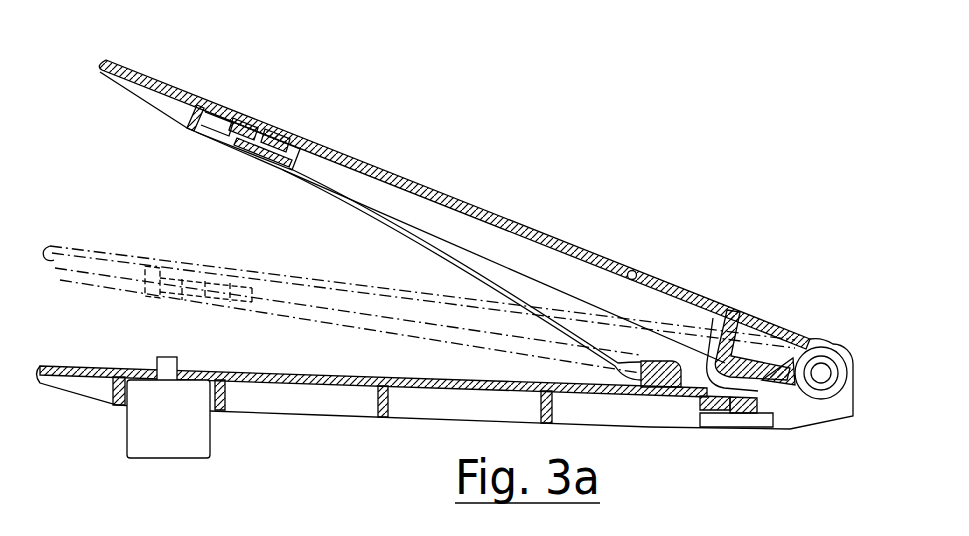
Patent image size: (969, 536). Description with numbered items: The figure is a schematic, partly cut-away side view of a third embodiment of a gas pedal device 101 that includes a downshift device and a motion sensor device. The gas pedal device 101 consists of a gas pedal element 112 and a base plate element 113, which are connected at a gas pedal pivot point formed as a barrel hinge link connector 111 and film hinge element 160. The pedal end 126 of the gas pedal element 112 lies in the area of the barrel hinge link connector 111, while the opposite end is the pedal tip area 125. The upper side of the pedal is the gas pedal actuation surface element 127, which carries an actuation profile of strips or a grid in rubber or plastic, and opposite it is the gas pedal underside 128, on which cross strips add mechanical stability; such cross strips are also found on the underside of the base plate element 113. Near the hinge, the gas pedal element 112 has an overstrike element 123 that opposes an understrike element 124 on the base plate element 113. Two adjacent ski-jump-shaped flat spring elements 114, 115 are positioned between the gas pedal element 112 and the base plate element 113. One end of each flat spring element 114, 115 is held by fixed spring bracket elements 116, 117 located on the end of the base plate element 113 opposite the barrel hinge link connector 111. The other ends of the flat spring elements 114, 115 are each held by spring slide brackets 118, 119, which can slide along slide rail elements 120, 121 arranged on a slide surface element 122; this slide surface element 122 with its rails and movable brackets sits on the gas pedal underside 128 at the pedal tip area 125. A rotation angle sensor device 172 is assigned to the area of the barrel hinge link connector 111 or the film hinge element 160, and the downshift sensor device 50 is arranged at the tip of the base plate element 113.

The downshift sensor device 50 is at (143, 395).
The gas pedal device 101 is at (426, 211).
The barrel hinge link connector 111 is at (833, 313).
The film hinge element 160 is at (822, 364).
The gas pedal element 112 is at (426, 211).
The base plate element 113 is at (312, 418).
The ski-jump-shaped flat spring element 114 is at (348, 335).
The ski-jump-shaped flat spring element 115 is at (388, 322).
The fixed spring bracket element 116 is at (679, 443).
The fixed spring bracket element 117 is at (660, 388).
The spring slide bracket 118 is at (292, 186).
The spring slide bracket 119 is at (270, 124).
The slide rail element 120 is at (235, 93).
The slide rail element 121 is at (263, 152).
The slide surface element 122 is at (236, 127).
The overstrike element 123 is at (766, 356).
The understrike element 124 is at (748, 404).
The pedal tip area 125 is at (162, 93).
The pedal end 126 is at (804, 324).
The gas pedal actuation surface element 127 is at (562, 238).
The gas pedal underside 128 is at (632, 270).
The rotation angle sensor device 172 is at (805, 400).